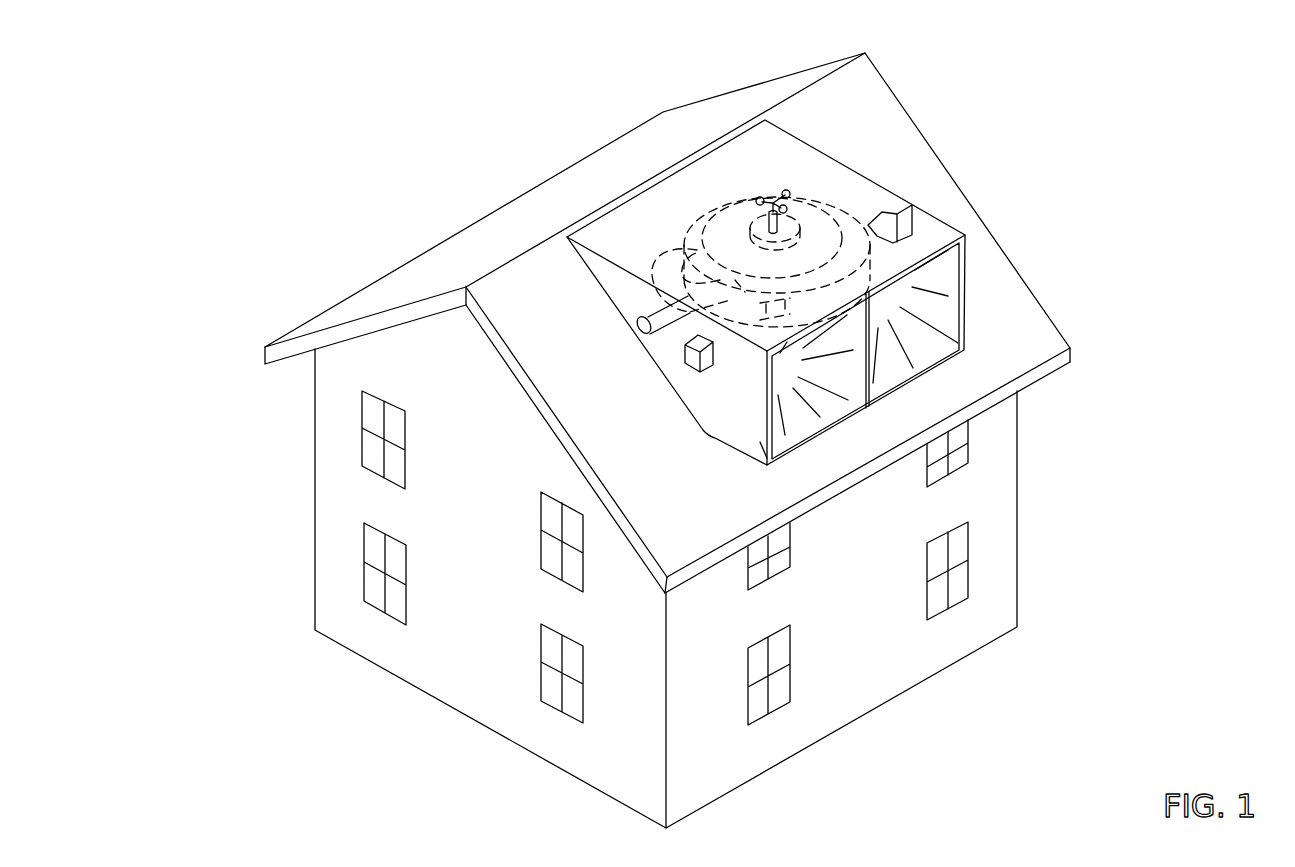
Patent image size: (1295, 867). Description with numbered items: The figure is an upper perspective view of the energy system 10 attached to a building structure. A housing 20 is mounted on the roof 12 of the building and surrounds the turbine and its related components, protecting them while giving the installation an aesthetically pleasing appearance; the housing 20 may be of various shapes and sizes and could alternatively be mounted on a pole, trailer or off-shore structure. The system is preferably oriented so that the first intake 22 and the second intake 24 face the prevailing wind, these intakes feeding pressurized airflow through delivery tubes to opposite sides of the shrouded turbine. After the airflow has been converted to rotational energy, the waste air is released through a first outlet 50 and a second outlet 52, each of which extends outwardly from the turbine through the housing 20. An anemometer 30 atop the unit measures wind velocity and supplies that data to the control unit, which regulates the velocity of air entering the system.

The energy system 10 is at (745, 440).
The roof 12 is at (992, 273).
The housing 20 is at (900, 187).
The first intake 22 is at (966, 349).
The second intake 24 is at (808, 428).
The anemometer 30 is at (774, 193).
The first outlet 50 is at (637, 328).
The second outlet 52 is at (862, 213).